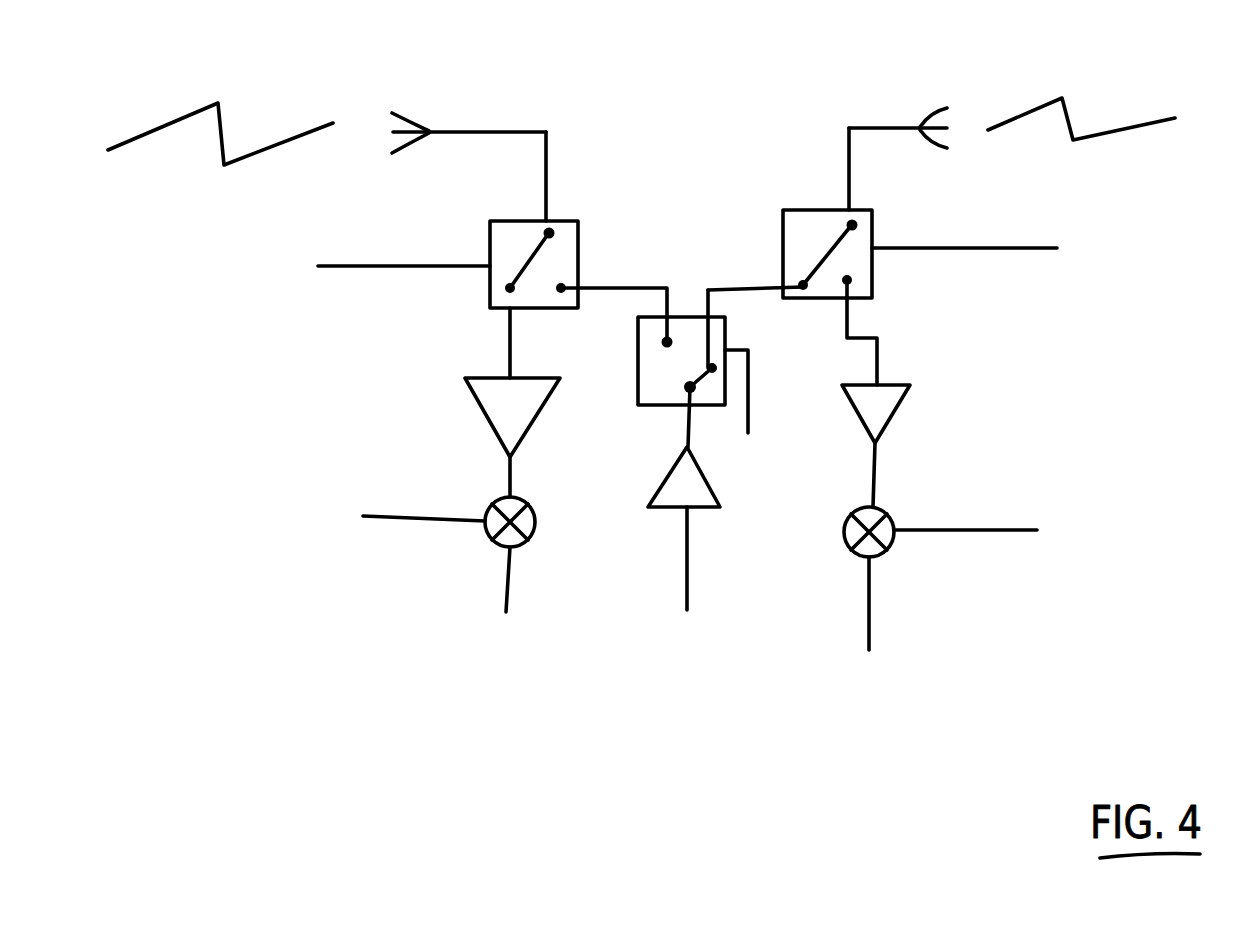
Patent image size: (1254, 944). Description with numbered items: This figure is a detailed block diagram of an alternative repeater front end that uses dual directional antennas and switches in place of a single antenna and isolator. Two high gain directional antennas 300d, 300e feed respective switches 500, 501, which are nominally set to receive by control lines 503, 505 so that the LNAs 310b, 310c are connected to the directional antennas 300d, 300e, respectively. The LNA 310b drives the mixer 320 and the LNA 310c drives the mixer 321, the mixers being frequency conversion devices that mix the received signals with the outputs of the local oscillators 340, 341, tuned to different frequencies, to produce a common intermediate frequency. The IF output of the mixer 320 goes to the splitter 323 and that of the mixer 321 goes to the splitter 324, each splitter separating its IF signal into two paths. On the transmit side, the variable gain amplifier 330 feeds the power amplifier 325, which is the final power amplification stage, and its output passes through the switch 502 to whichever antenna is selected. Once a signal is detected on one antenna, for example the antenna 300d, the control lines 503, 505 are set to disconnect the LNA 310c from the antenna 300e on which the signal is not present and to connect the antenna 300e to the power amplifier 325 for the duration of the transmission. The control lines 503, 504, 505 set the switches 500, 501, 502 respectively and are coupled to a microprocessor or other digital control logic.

The high gain directional antenna 300d is at (440, 122).
The high gain directional antenna 300e is at (900, 107).
The switch 500 is at (580, 238).
The switch 501 is at (783, 222).
The switch 502 is at (640, 388).
The control line 503 is at (400, 258).
The control line 504 is at (755, 392).
The control line 505 is at (1005, 272).
The LNA 310b is at (475, 392).
The LNA 310c is at (890, 408).
The power amplifier 325 is at (690, 482).
The mixer 320 is at (565, 507).
The mixer 321 is at (887, 505).
The splitter 323 is at (463, 608).
The splitter 324 is at (914, 625).
The amplifier 330 is at (695, 594).
The local oscillator 340 is at (340, 524).
The local oscillator 341 is at (1068, 539).